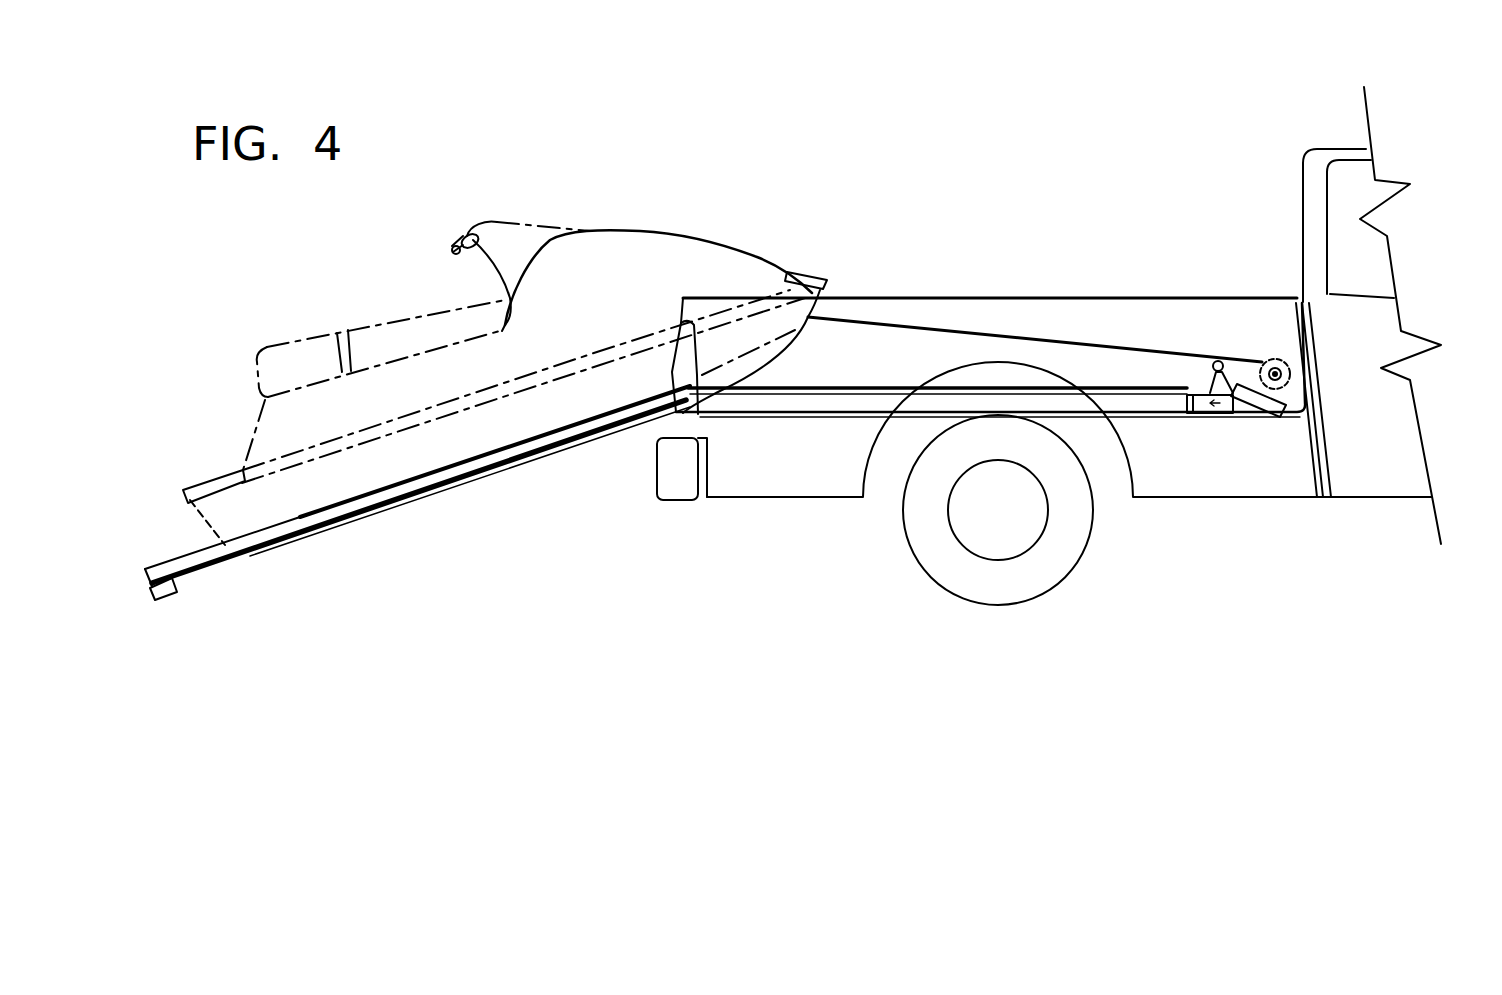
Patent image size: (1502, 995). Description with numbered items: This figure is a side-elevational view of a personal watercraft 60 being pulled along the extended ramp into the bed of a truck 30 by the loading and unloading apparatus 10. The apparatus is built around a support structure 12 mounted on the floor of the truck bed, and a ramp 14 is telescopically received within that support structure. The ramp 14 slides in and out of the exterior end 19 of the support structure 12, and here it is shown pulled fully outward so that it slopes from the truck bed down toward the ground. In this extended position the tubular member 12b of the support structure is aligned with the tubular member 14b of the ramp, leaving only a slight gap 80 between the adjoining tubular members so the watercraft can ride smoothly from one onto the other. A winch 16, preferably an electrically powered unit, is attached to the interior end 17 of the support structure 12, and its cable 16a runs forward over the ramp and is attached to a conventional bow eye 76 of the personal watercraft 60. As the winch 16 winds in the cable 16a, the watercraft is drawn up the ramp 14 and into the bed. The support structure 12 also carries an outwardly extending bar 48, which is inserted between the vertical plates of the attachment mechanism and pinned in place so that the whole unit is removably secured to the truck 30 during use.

The loading and unloading system 10 is at (1078, 200).
The support structure 12 is at (855, 403).
The tubular member 12b is at (793, 400).
The ramp 14 is at (240, 570).
The tubular member 14b is at (358, 518).
The winch 16 is at (1298, 394).
The cable 16a is at (880, 318).
The interior end 17 is at (1187, 417).
The exterior end 19 is at (727, 397).
The truck 30 is at (1295, 186).
The outwardly extending bar 48 is at (1252, 420).
The personal watercraft 60 is at (632, 262).
The bow eye 76 is at (790, 282).
The gap 80 is at (670, 377).